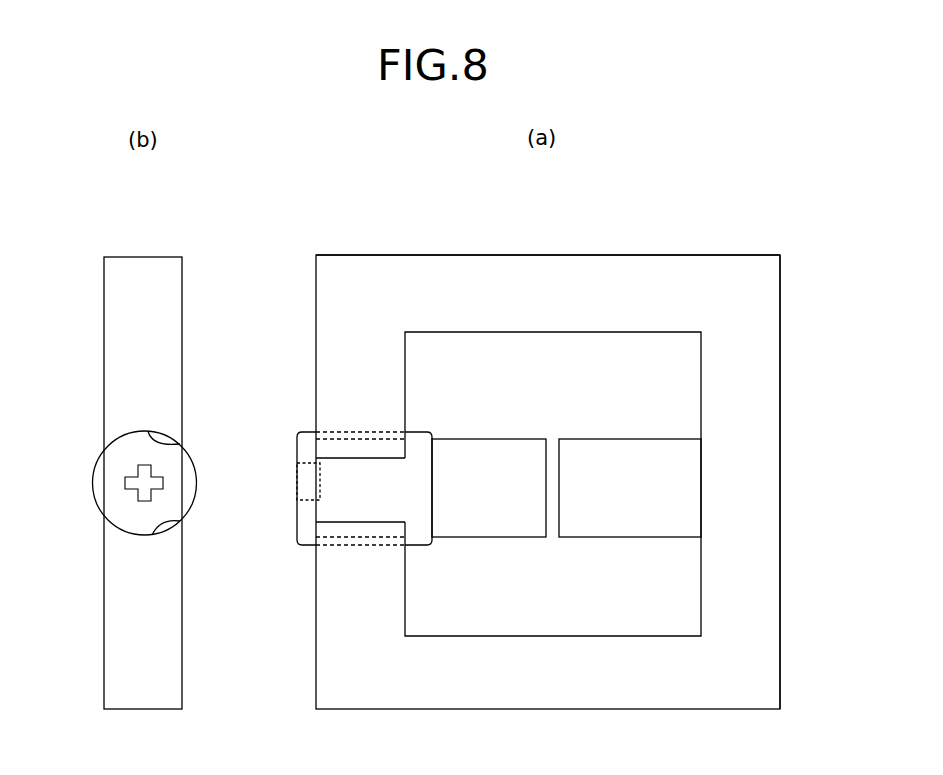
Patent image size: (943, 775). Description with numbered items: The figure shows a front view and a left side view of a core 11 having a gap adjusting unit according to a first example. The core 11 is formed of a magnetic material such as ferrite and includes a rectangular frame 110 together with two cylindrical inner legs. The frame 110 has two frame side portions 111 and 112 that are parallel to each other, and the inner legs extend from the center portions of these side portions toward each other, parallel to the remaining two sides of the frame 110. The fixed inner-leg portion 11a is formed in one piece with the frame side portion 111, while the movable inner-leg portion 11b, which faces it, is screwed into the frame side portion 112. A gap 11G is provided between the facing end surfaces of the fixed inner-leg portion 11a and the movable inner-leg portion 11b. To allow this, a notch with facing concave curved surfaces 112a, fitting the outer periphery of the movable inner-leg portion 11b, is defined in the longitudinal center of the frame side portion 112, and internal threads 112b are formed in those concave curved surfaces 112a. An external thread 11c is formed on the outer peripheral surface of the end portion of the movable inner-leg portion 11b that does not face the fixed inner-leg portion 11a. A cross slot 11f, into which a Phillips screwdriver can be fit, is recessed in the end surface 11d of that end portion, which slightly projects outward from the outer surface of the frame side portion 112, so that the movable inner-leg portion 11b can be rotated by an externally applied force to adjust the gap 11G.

The core 11 is at (681, 237).
The rectangular frame 110 is at (472, 257).
The frame side portion 111 is at (765, 473).
The frame side portion 112 is at (116, 349).
The concave curved surfaces 112a is at (181, 444).
The internal threads 112b is at (377, 452).
The fixed inner-leg portion 11a is at (623, 442).
The movable inner-leg portion 11b is at (500, 449).
The external thread 11c is at (433, 546).
The end surface 11d is at (108, 511).
The cross slot 11f is at (126, 484).
The gap 11G is at (554, 530).